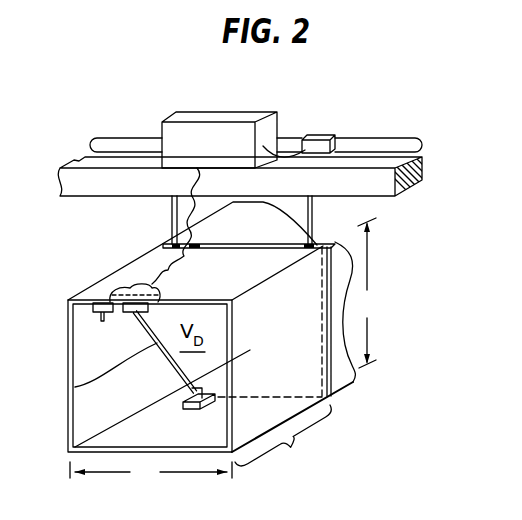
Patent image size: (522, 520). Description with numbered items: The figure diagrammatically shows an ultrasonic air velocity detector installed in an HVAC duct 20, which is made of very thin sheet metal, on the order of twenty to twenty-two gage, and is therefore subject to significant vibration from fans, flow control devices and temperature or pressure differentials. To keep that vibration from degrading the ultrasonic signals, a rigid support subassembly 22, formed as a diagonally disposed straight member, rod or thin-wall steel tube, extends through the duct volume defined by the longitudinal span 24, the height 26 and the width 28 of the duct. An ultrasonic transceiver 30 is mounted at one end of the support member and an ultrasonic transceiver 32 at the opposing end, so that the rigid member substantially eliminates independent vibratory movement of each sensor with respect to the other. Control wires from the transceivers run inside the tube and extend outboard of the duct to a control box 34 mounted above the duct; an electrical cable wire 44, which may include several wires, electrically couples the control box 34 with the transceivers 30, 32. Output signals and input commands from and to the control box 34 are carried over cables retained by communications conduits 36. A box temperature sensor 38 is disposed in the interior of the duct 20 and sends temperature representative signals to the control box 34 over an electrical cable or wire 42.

The HVAC duct 20 is at (330, 370).
The rigid support subassembly 22 is at (73, 390).
The longitudinal span 24 is at (283, 442).
The height of the duct 26 is at (368, 293).
The width of the duct 28 is at (151, 475).
The ultrasonic transceiver 30 is at (160, 305).
The ultrasonic transceiver 32 is at (200, 390).
The control box 34 is at (198, 113).
The communications conduit 36 is at (317, 135).
The box temperature sensor 38 is at (92, 312).
The electrical cable 42 is at (128, 278).
The electrical cable wire 44 is at (133, 280).